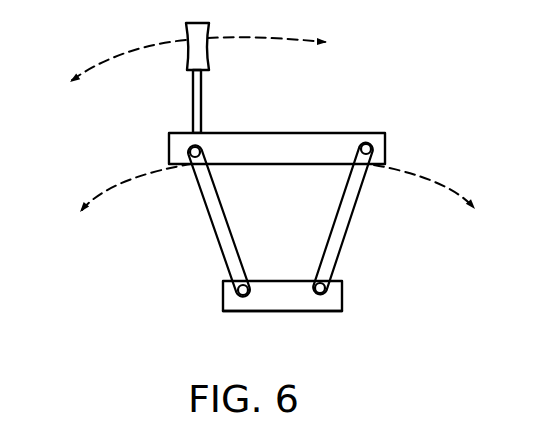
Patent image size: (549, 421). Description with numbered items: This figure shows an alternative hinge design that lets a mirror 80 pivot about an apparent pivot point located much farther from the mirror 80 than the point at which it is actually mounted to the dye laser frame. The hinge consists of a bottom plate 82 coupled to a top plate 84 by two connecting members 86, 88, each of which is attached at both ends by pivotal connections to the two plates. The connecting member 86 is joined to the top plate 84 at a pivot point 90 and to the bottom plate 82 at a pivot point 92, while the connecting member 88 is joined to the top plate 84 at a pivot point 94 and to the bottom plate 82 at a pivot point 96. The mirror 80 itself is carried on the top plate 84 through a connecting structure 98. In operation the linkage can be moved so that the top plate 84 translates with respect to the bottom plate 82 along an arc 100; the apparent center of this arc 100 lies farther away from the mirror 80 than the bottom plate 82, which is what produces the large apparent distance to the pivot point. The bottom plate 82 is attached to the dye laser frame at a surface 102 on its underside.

The mirror 80 is at (190, 52).
The connecting structure 98 is at (203, 91).
The top plate 84 is at (360, 133).
The pivot point 94 is at (190, 152).
The pivot point 90 is at (371, 148).
The connecting member 88 is at (223, 232).
The connecting member 86 is at (344, 229).
The pivot point 96 is at (238, 291).
The pivot point 92 is at (325, 285).
The bottom plate 82 is at (333, 302).
The surface 102 is at (310, 312).
The arc 100 is at (104, 197).